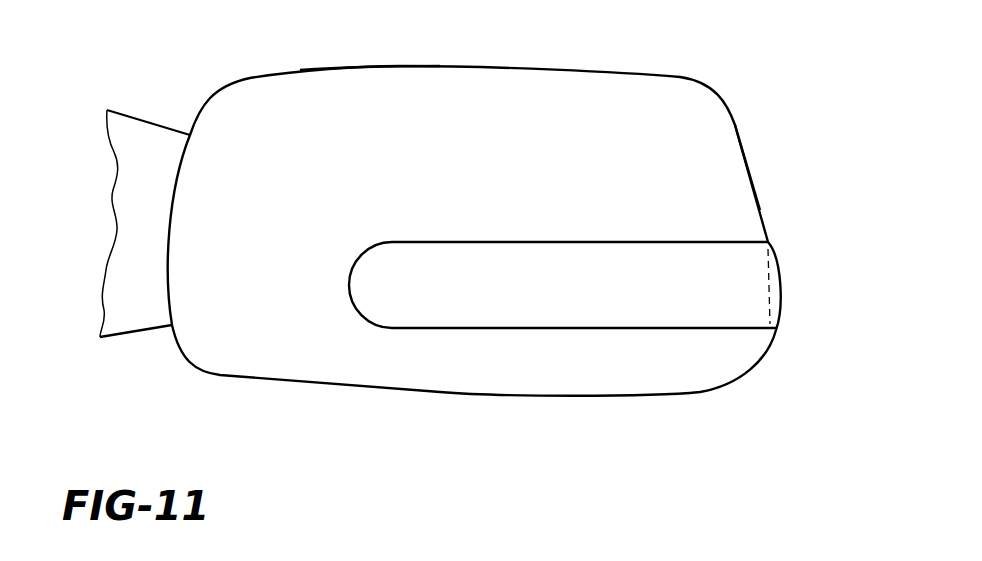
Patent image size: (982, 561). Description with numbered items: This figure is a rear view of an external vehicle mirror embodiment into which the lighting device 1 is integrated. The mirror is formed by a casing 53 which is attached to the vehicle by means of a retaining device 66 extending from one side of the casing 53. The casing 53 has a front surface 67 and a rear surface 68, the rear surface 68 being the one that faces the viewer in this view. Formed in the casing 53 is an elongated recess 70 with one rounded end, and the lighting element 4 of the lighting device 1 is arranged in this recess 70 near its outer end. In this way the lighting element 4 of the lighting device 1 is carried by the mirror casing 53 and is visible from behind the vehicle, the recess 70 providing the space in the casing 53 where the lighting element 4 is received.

The lighting device 1 is at (457, 343).
The lighting element 4 is at (725, 322).
The casing 53 is at (268, 352).
The retaining device 66 is at (137, 130).
The front surface 67 is at (755, 178).
The rear surface 68 is at (308, 80).
The recess 70 is at (604, 221).